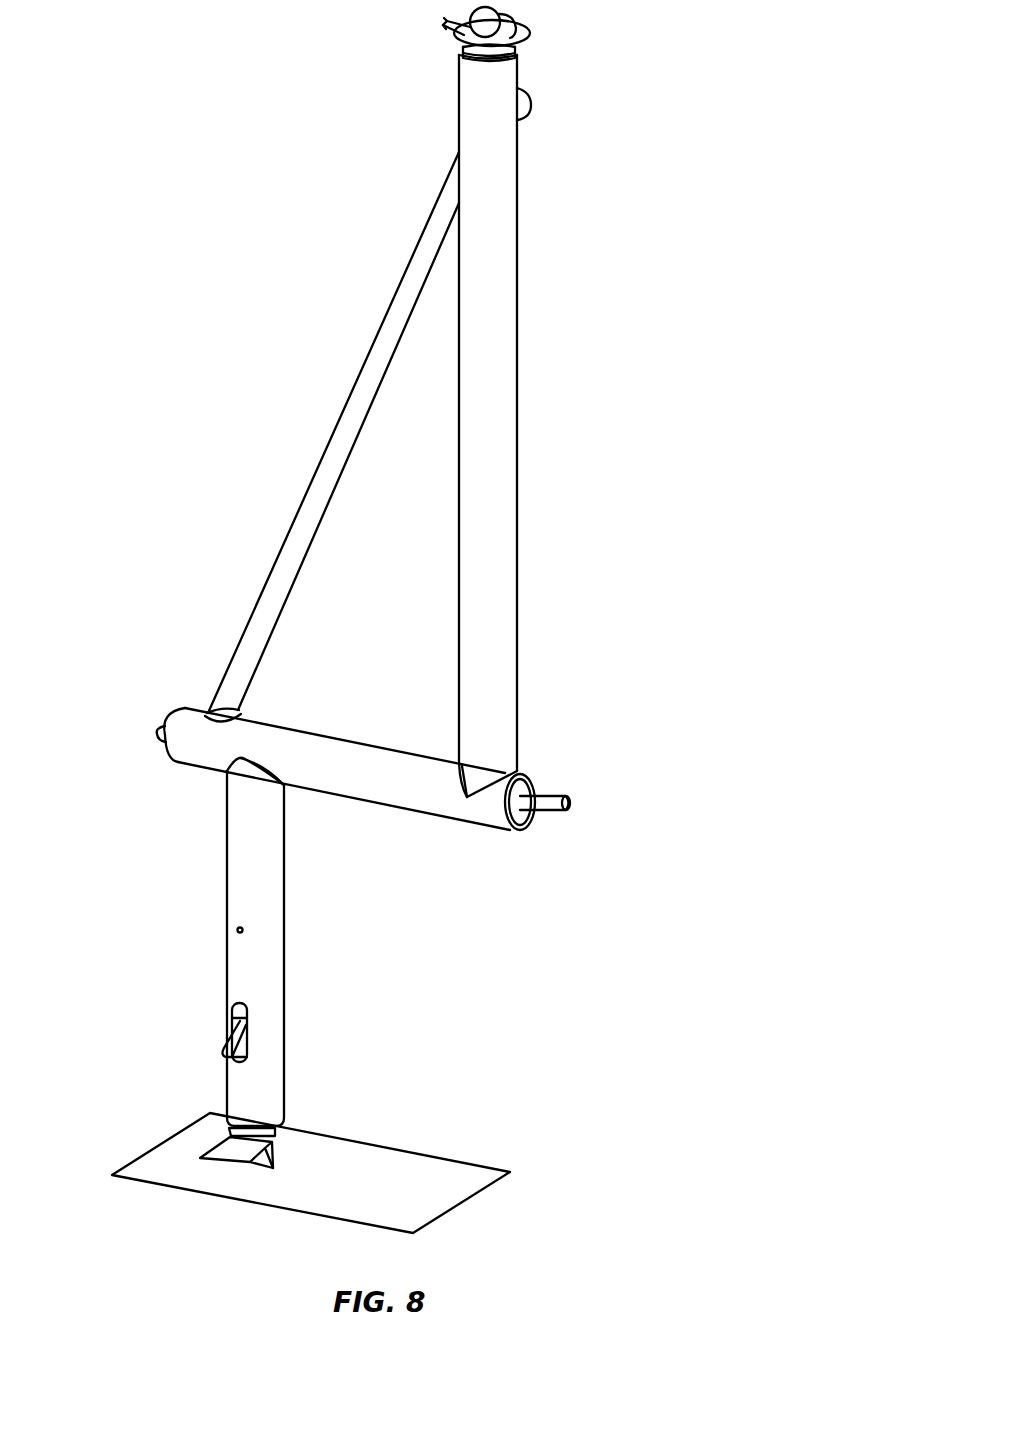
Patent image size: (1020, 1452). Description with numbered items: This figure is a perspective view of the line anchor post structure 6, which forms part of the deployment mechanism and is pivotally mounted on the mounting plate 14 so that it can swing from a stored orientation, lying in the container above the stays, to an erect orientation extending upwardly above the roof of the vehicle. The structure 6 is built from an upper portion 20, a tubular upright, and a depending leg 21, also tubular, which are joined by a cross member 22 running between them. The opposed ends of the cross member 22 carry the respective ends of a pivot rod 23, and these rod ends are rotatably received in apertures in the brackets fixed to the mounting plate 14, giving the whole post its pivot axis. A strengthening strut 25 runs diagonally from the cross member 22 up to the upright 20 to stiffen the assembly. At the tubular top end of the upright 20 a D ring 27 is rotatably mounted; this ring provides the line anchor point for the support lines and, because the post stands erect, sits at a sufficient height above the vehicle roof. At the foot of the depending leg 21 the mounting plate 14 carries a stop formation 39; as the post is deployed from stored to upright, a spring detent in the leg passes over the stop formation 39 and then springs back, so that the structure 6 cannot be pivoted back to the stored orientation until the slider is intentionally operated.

The line anchor post structure 6 is at (556, 263).
The mounting plate 14 is at (304, 1205).
The upper portion 20 is at (498, 433).
The depending leg 21 is at (282, 908).
The cross member 22 is at (358, 752).
The pivot rod 23 is at (158, 735).
The strengthening strut 25 is at (366, 362).
The D ring 27 is at (528, 38).
The stop formation 39 is at (247, 1153).